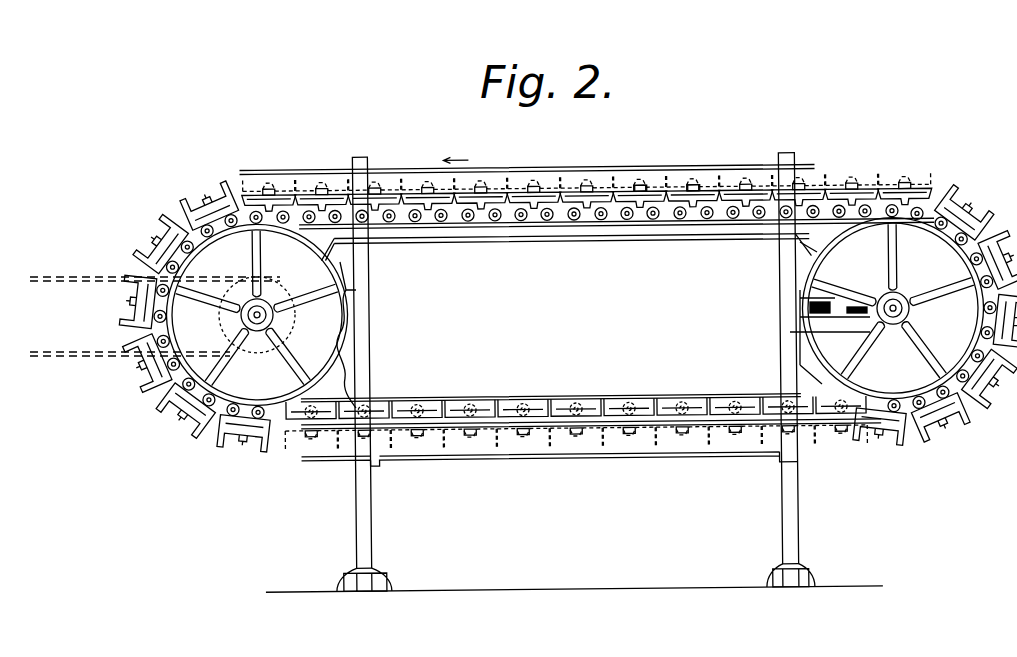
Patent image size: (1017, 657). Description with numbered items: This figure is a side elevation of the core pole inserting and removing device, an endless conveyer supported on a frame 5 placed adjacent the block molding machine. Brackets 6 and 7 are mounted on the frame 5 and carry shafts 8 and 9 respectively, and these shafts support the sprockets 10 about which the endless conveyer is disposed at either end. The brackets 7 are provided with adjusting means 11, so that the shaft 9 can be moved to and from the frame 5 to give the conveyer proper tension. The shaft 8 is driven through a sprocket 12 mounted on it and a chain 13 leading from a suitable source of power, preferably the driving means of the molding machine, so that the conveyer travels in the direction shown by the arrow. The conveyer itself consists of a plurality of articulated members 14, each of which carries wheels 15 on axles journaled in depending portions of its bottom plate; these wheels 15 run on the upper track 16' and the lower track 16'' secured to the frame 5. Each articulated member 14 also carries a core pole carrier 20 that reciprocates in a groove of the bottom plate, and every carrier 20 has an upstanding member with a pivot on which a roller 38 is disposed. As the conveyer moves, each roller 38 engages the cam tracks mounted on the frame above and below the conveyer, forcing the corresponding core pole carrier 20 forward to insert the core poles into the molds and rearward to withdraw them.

The frame 5 is at (364, 306).
The bracket 6 is at (322, 318).
The bracket 7 is at (830, 338).
The shaft 8 is at (258, 318).
The shaft 9 is at (910, 310).
The sprocket 10 is at (345, 350).
The adjusting means 11 is at (857, 306).
The sprocket 12 is at (271, 290).
The chain 13 is at (58, 278).
The articulated member 14 is at (620, 205).
The wheel 15 is at (682, 220).
The track 16' is at (587, 226).
The track 16'' is at (591, 393).
The core pole carrier 20 is at (209, 198).
The roller 38 is at (693, 190).